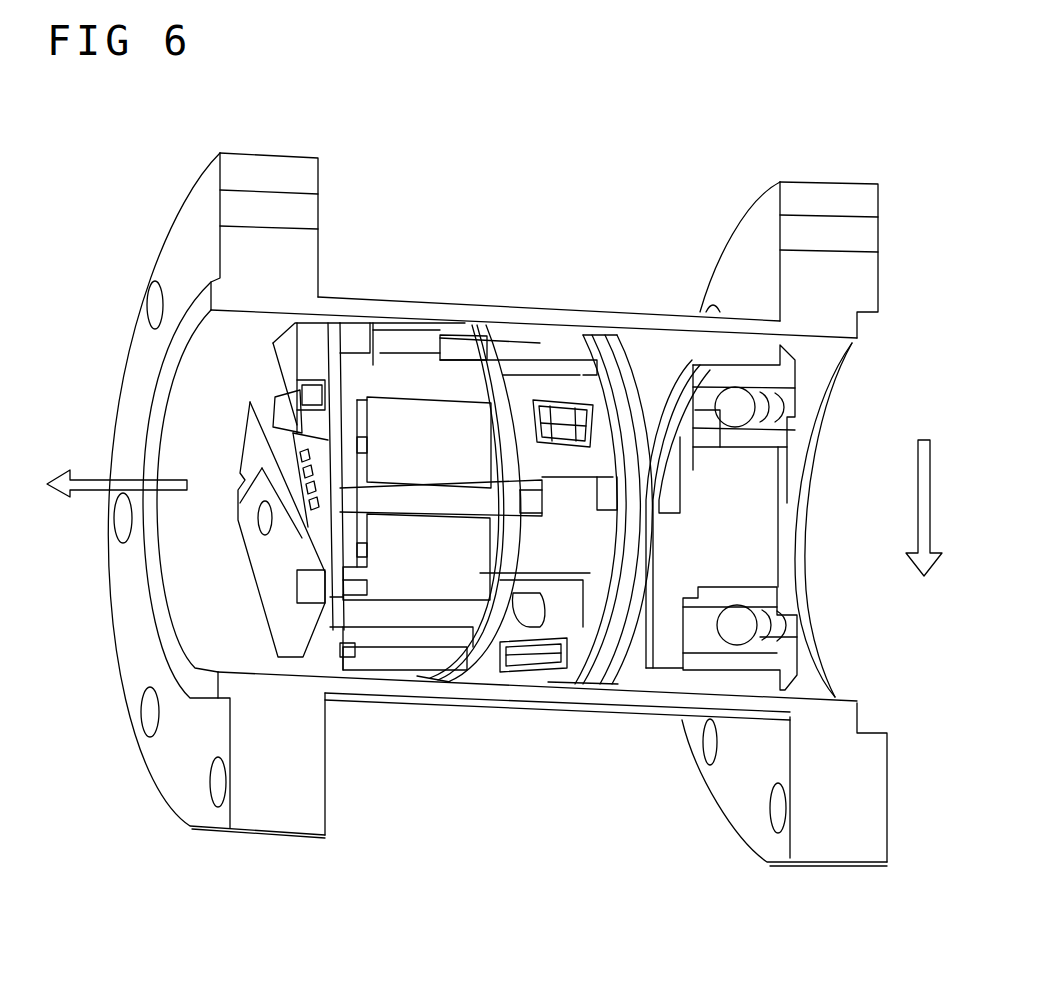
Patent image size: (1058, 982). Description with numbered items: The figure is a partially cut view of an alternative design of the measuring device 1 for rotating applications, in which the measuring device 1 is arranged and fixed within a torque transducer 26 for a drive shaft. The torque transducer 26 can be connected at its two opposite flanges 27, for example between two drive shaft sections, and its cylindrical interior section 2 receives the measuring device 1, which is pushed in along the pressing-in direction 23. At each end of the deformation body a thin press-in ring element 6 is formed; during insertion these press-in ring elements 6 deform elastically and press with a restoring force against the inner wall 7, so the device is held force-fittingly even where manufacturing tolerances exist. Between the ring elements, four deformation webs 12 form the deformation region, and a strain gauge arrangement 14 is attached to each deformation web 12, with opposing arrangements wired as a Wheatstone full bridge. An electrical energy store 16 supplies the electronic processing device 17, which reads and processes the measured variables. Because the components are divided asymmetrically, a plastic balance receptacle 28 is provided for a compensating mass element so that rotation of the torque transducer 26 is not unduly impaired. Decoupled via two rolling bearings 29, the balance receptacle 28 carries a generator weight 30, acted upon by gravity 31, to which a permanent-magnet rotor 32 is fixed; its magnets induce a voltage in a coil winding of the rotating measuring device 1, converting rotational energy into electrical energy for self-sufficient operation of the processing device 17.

The measuring device 1 is at (541, 124).
The cylindrical interior section 2 is at (190, 412).
The press-in ring element 6 is at (478, 325).
The inner wall 7 is at (240, 674).
The deformation web 12 is at (535, 390).
The strain gauge arrangement 14 is at (533, 660).
The electrical energy store 16 is at (285, 610).
The electronic processing device 17 is at (293, 470).
The pressing-in direction 23 is at (93, 487).
The torque transducer 26 is at (350, 688).
The flange 27 is at (188, 207).
The balance receptacle 28 is at (747, 357).
The rolling bearing 29 is at (707, 377).
The generator weight 30 is at (745, 515).
The gravity 31 is at (938, 440).
The permanent-magnet rotor 32 is at (417, 573).